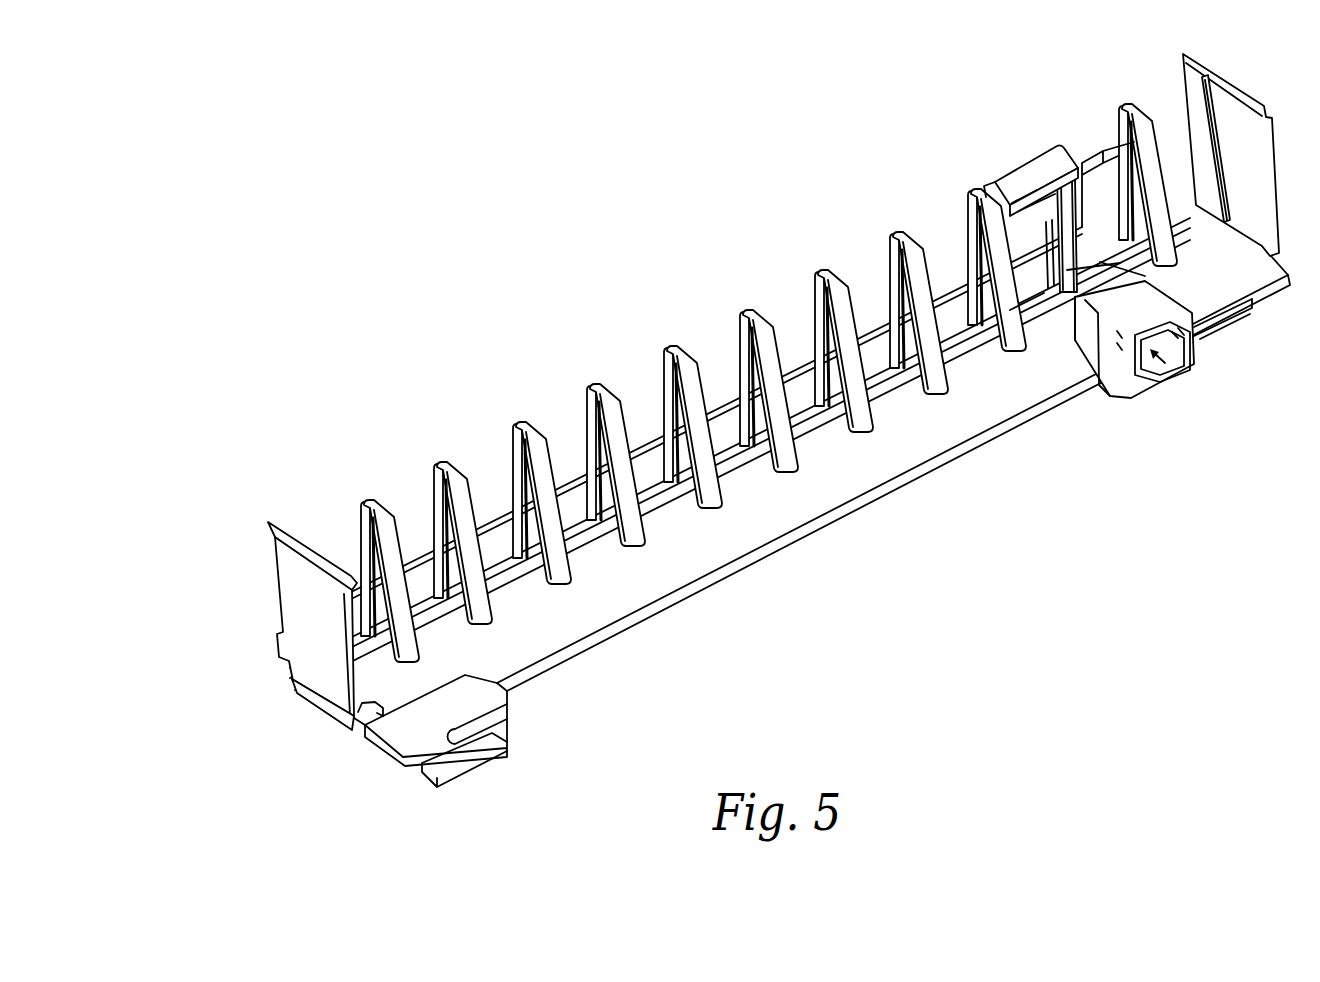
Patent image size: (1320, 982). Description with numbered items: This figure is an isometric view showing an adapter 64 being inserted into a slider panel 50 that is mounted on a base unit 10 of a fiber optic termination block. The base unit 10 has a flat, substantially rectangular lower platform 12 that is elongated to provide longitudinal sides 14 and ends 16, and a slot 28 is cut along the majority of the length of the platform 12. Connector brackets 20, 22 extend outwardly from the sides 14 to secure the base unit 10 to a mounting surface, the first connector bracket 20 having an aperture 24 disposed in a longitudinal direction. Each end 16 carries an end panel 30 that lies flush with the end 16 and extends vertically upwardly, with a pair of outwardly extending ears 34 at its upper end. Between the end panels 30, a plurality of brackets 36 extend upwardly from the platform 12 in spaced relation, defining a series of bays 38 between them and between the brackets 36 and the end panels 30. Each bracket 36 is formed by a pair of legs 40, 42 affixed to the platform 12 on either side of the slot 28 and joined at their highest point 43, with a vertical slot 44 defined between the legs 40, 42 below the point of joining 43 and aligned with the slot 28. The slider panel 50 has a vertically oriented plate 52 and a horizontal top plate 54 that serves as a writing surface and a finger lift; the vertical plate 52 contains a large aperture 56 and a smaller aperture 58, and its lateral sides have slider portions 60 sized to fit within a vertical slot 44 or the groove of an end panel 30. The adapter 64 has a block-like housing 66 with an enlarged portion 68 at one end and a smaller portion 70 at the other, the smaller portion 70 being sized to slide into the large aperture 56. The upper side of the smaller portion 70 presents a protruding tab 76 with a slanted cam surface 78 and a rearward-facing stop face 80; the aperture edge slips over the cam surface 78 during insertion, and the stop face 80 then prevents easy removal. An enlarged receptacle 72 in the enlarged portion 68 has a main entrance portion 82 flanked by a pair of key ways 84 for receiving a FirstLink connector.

The base unit 10 is at (705, 596).
The lower platform 12 is at (797, 537).
The longitudinal sides 14 is at (643, 447).
The ends 16 is at (322, 703).
The first connector bracket 20 is at (470, 770).
The connector bracket 22 is at (1204, 143).
The aperture 24 is at (413, 768).
The slot 28 is at (738, 440).
The end panel 30 is at (274, 606).
The ears 34 is at (267, 527).
The brackets 36 is at (744, 304).
The bays 38 is at (590, 560).
The leg 40 is at (711, 382).
The leg 42 is at (625, 450).
The highest point 43 is at (906, 232).
The vertical slot 44 is at (583, 458).
The slider panel 50 is at (969, 187).
The vertical plate 52 is at (1070, 178).
The top plate 54 is at (1043, 168).
The large aperture 56 is at (1027, 270).
The smaller aperture 58 is at (1000, 203).
The slider portions 60 is at (1000, 307).
The adapter 64 is at (1144, 380).
The housing 66 is at (1222, 300).
The enlarged portion 68 is at (1170, 275).
The smaller portion 70 is at (1228, 200).
The enlarged receptacle 72 is at (1180, 337).
The tab 76 is at (1127, 260).
The cam surface 78 is at (1067, 303).
The stop face 80 is at (1070, 295).
The main entrance portion 82 is at (1153, 352).
The key ways 84 is at (1120, 337).